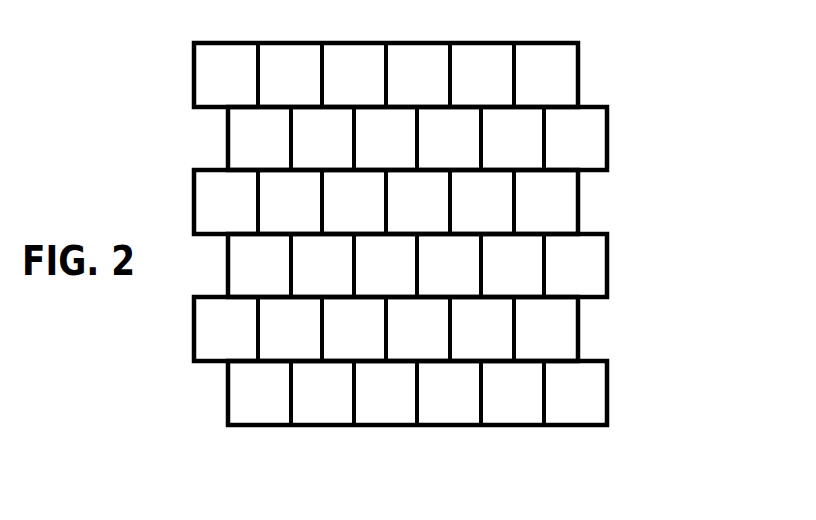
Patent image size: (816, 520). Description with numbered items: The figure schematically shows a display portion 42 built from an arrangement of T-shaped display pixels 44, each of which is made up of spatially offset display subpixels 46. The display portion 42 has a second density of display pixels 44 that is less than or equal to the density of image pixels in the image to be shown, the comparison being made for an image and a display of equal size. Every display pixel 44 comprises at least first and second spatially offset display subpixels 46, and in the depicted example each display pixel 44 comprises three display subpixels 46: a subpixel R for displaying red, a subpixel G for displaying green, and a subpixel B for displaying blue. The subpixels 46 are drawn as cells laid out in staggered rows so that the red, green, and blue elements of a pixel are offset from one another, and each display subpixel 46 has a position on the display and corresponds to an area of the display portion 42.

The display portion 42 is at (442, 265).
The display pixel 44 is at (194, 199).
The display subpixel 46 is at (596, 125).